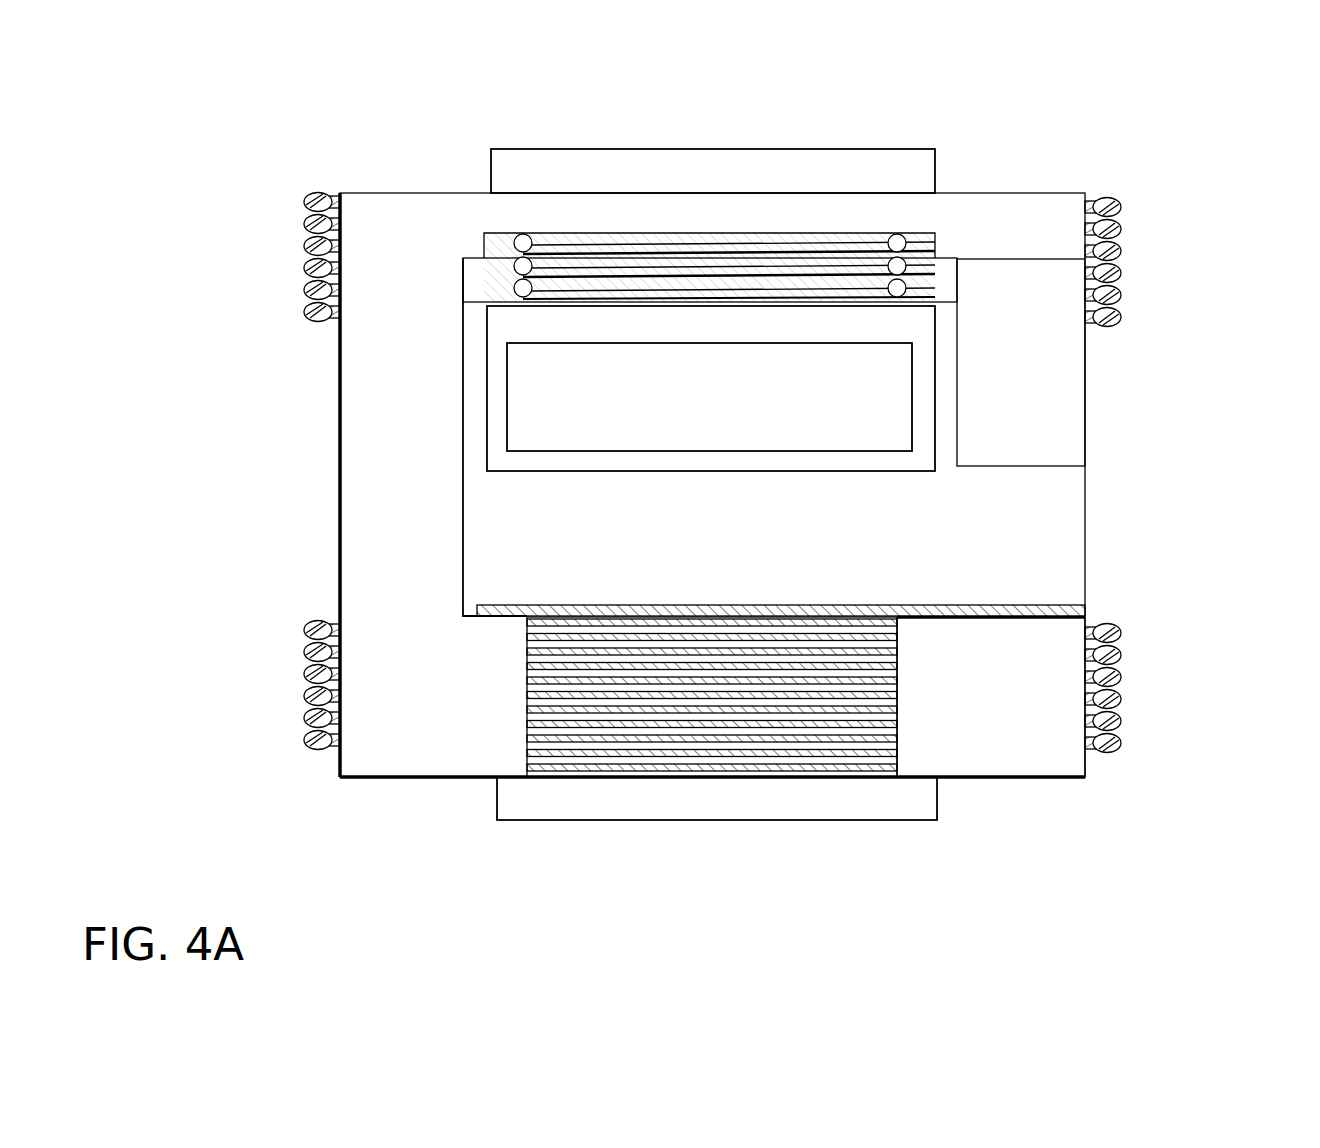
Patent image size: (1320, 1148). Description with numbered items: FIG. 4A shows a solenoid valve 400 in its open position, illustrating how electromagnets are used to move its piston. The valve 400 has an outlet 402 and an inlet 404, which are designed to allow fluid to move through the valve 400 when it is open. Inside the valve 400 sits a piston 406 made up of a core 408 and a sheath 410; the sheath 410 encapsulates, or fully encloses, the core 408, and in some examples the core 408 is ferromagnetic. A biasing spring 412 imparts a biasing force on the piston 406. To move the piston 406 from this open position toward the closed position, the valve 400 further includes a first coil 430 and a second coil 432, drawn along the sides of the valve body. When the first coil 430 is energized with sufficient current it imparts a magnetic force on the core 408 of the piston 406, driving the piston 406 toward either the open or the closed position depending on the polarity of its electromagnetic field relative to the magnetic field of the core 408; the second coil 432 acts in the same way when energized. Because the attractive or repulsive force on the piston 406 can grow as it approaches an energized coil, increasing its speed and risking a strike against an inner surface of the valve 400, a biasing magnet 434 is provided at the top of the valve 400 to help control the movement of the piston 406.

The valve 400 is at (1114, 74).
The outlet 402 is at (904, 522).
The inlet 404 is at (719, 792).
The piston 406 is at (830, 418).
The core 408 is at (538, 398).
The sheath 410 is at (500, 421).
The biasing spring 412 is at (920, 322).
The first coil 430 is at (1124, 260).
The second coil 432 is at (1132, 672).
The biasing magnet 434 is at (648, 177).